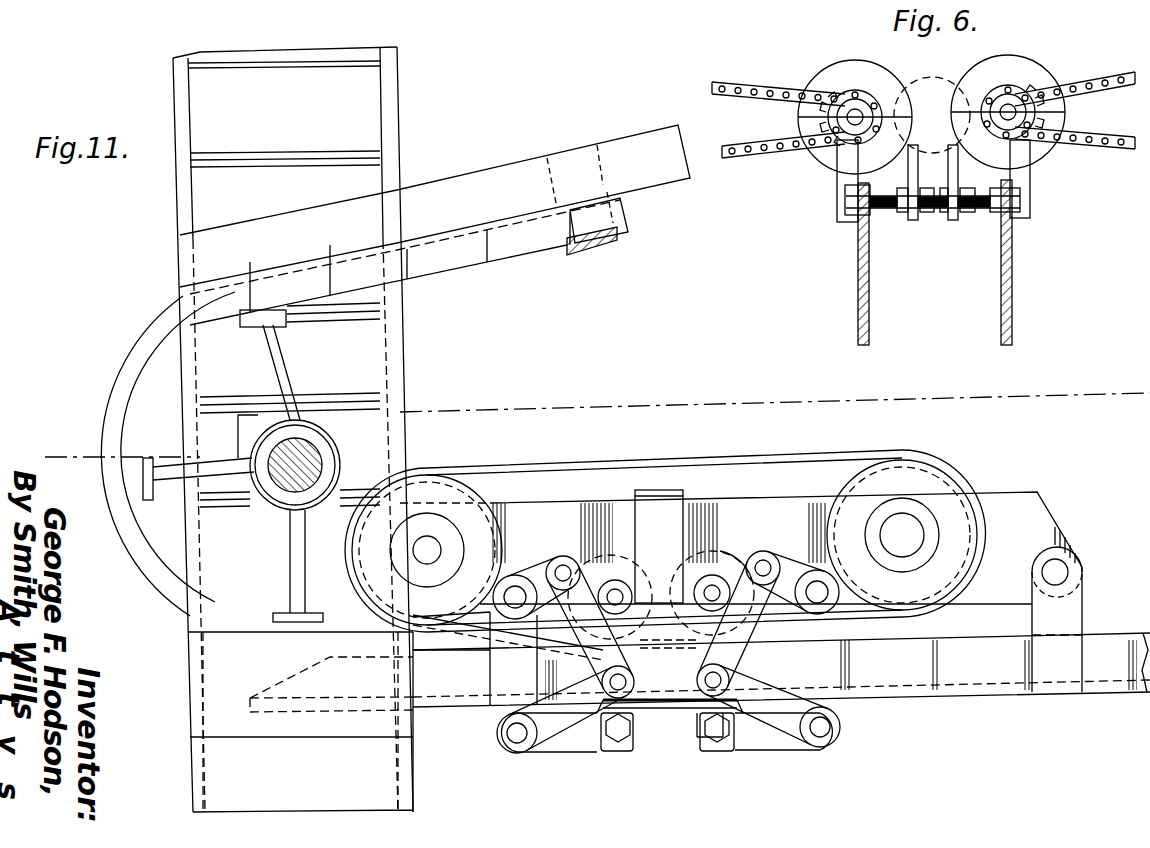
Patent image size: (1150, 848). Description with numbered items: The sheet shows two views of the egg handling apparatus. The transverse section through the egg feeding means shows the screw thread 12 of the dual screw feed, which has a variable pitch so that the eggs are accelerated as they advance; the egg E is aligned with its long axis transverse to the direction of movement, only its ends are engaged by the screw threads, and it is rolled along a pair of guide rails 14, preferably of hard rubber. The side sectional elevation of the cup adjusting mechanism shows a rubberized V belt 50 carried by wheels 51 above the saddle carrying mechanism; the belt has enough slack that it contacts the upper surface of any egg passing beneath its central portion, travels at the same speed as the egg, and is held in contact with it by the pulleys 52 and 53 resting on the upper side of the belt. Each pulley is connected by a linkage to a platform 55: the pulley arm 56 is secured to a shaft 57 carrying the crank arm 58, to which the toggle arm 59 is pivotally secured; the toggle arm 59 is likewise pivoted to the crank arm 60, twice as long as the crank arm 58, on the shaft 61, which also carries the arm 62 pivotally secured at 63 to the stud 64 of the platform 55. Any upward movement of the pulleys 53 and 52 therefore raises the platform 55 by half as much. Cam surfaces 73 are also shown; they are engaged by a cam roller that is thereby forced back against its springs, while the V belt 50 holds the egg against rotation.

In FIG. 11, the screw thread 12 is at (77, 402).
In FIG. 6, the screw thread 12 is at (868, 63).
In FIG. 6, the guide rails 14 is at (956, 165).
In FIG. 6, the egg E is at (931, 84).
In FIG. 11, the V belt 50 is at (820, 460).
In FIG. 11, the wheels 51 is at (466, 502).
In FIG. 11, the pulley 52 is at (612, 553).
In FIG. 11, the pulley 53 is at (722, 552).
In FIG. 11, the platform 55 is at (667, 708).
In FIG. 11, the pulley arm 56 is at (600, 588).
In FIG. 11, the shaft 57 is at (514, 588).
In FIG. 11, the crank arm 58 is at (560, 560).
In FIG. 11, the toggle arm 59 is at (715, 659).
In FIG. 11, the crank arm 60 is at (578, 697).
In FIG. 11, the shaft 61 is at (517, 737).
In FIG. 11, the arm 62 is at (582, 740).
In FIG. 11, the pivot 63 is at (618, 745).
In FIG. 11, the stud 64 is at (700, 720).
In FIG. 11, the cam surfaces 73 is at (535, 240).